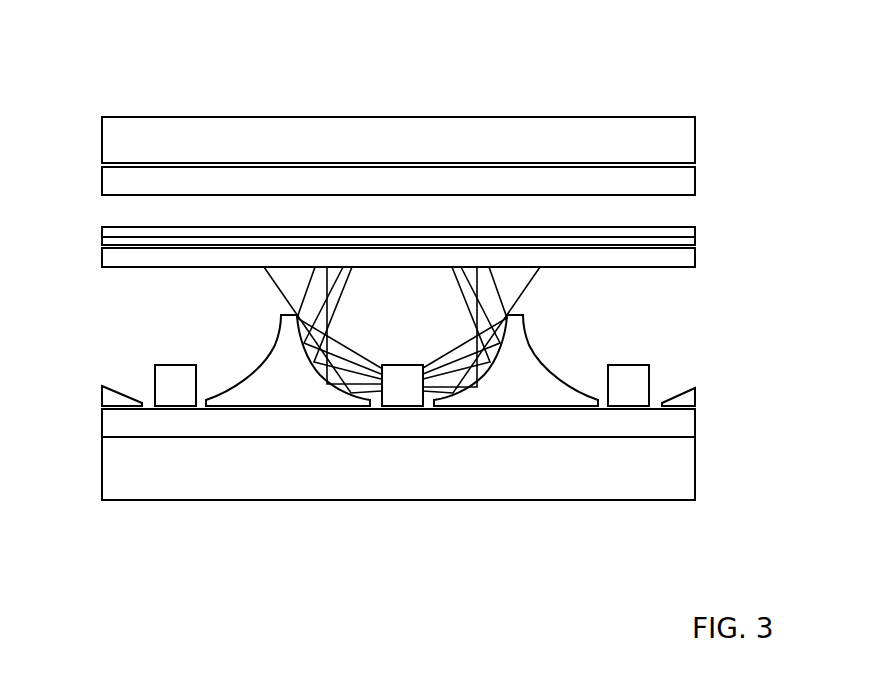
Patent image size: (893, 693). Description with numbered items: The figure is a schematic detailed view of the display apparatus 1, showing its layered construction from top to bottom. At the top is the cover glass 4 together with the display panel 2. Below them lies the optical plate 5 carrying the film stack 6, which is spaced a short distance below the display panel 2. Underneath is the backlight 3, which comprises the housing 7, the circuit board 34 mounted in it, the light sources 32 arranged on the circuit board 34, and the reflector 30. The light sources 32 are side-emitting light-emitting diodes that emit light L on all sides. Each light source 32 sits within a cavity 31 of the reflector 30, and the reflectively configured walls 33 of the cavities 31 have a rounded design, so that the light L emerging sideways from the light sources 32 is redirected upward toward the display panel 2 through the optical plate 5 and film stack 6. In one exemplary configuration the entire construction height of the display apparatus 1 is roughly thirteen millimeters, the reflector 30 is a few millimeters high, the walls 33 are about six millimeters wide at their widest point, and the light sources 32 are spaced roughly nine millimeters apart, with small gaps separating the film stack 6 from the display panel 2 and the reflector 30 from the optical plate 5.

The display apparatus 1 is at (215, 88).
The display panel 2 is at (110, 182).
The backlight 3 is at (617, 525).
The cover glass 4 is at (686, 141).
The optical plate 5 is at (683, 262).
The film stack 6 is at (690, 232).
The housing 7 is at (308, 490).
The reflector 30 is at (515, 390).
The cavity 31 is at (612, 328).
The light source 32 is at (400, 398).
The wall 33 is at (262, 370).
The circuit board 34 is at (686, 423).
The light L is at (348, 350).